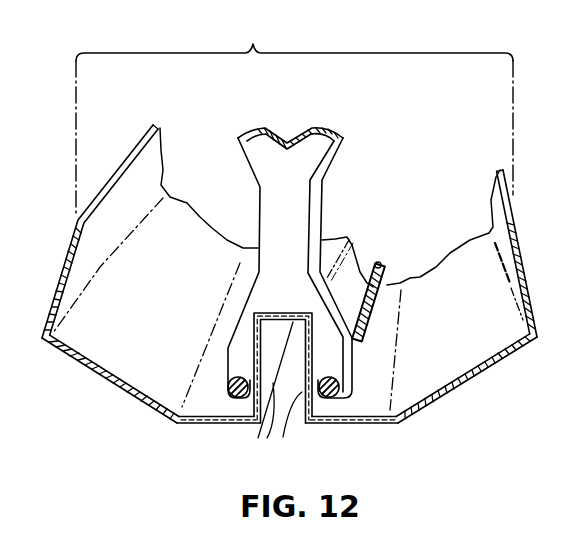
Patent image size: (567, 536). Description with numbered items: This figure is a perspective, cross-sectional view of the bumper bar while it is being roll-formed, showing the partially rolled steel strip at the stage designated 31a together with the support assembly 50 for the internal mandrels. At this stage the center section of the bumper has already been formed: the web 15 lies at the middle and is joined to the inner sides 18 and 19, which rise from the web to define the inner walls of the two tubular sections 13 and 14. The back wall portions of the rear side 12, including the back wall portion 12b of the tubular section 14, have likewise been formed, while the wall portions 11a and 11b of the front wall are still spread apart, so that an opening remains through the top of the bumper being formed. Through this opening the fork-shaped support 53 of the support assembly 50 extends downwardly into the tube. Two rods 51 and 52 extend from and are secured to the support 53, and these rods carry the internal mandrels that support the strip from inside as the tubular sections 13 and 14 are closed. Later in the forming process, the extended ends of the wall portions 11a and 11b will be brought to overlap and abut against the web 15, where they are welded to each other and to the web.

The rolled strip form 31a is at (294, 117).
The wall portion of the front wall 11a is at (58, 278).
The wall portion of the front wall 11b is at (528, 278).
The rear side 12 is at (183, 434).
The back wall portion 12b is at (208, 417).
The tubular section 13 is at (100, 382).
The tubular section 14 is at (503, 368).
The web 15 is at (278, 320).
The inner side 18 is at (268, 394).
The inner side 19 is at (290, 428).
The support assembly 50 is at (328, 263).
The rod 51 is at (232, 397).
The rod 52 is at (383, 268).
The support 53 is at (316, 200).